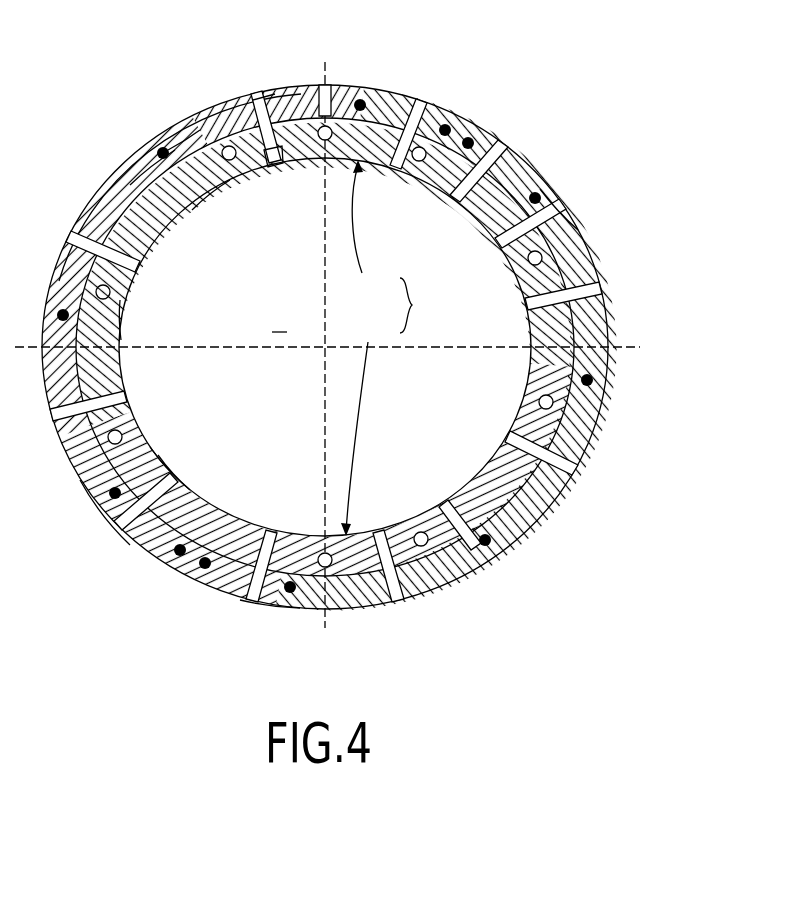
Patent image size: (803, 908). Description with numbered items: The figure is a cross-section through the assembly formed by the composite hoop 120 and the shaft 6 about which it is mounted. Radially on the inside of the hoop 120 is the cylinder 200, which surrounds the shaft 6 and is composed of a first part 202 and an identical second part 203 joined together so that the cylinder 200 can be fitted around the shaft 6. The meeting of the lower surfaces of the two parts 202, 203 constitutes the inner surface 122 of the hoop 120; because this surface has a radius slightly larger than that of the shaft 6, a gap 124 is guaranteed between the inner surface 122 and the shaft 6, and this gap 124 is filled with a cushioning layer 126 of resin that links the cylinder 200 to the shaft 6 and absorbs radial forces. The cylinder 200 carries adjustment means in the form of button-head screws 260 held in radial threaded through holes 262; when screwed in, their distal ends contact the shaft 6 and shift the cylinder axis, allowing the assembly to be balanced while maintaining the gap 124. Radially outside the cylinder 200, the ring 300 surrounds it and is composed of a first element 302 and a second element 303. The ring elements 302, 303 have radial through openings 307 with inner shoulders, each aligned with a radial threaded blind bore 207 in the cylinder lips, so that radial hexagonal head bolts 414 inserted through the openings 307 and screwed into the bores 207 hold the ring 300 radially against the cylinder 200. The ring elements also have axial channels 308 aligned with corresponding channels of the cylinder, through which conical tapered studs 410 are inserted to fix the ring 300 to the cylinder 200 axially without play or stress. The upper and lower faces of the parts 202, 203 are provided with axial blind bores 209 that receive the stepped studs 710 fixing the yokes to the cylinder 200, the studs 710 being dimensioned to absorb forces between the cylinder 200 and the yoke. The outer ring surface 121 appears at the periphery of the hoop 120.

The hoop 120 is at (545, 162).
The outer ring surface 121 is at (563, 207).
The inner surface 122 is at (482, 211).
The gap 124 is at (181, 477).
The cushioning layer 126 is at (161, 460).
The cylinder 200 is at (426, 305).
The first part 202 is at (374, 234).
The second part 203 is at (369, 422).
The radial threaded blind bore 207 is at (268, 165).
The axial blind bore 209 is at (118, 318).
The button-head screw 260 is at (203, 175).
The radial threaded through hole 262 is at (186, 165).
The ring 300 is at (197, 645).
The first element 302 is at (101, 516).
The second element 303 is at (262, 607).
The radial through opening 307 is at (252, 92).
The axial channel 308 is at (158, 157).
The conical tapered stud 410 is at (165, 146).
The radial hexagonal head bolt 414 is at (259, 92).
The stepped stud 710 is at (110, 292).
The shaft 6 is at (280, 317).